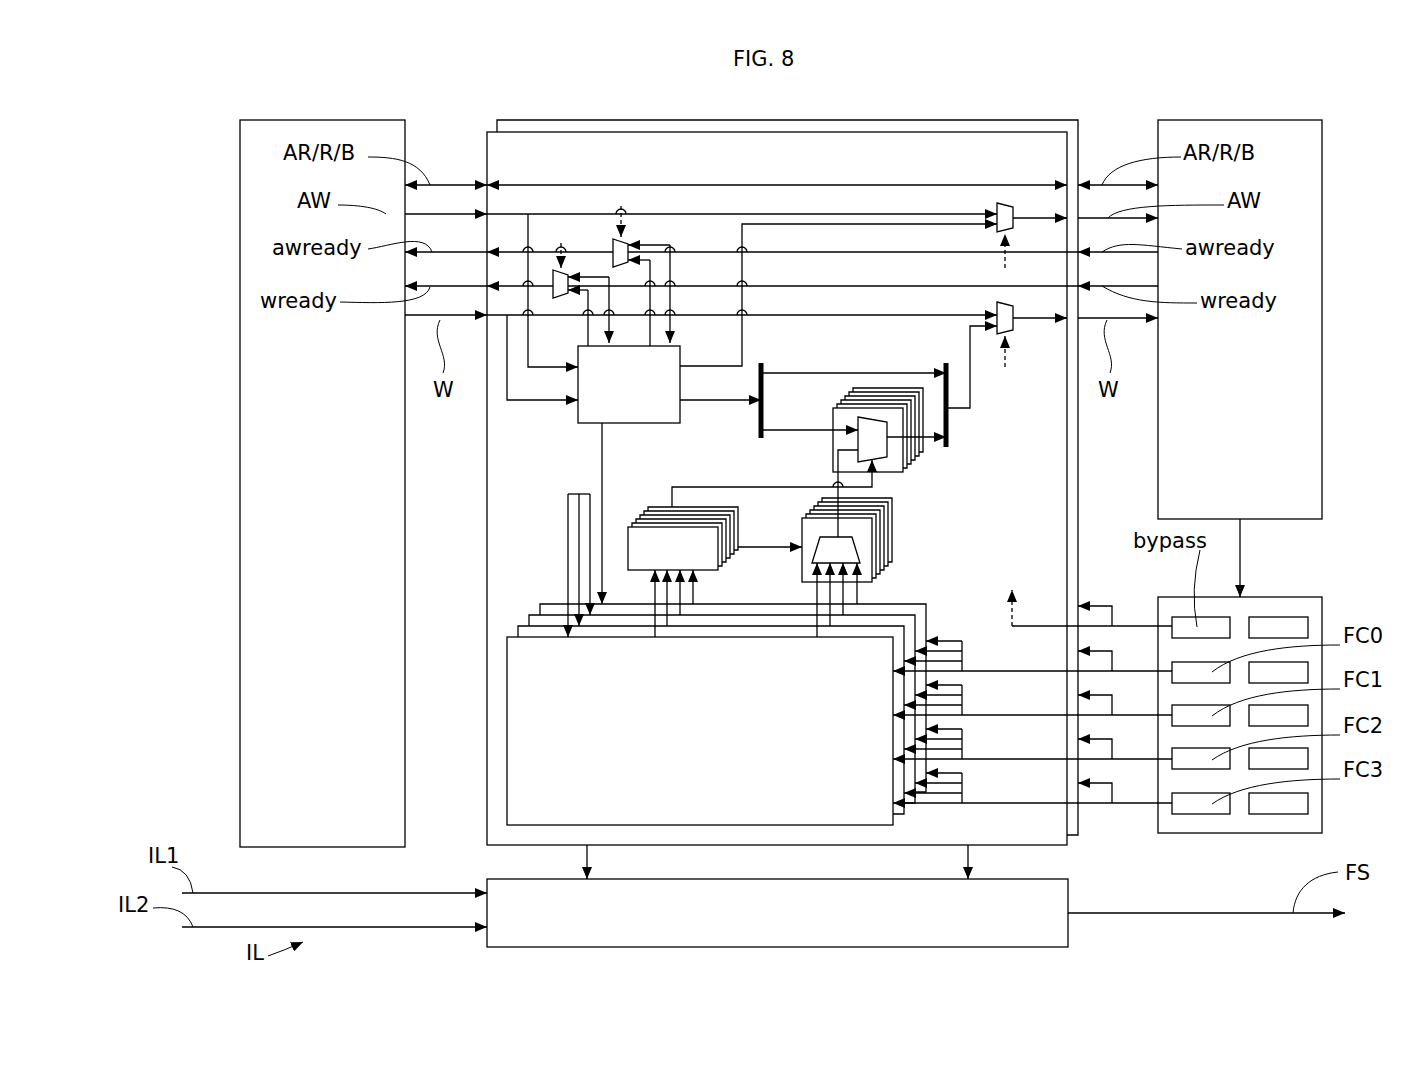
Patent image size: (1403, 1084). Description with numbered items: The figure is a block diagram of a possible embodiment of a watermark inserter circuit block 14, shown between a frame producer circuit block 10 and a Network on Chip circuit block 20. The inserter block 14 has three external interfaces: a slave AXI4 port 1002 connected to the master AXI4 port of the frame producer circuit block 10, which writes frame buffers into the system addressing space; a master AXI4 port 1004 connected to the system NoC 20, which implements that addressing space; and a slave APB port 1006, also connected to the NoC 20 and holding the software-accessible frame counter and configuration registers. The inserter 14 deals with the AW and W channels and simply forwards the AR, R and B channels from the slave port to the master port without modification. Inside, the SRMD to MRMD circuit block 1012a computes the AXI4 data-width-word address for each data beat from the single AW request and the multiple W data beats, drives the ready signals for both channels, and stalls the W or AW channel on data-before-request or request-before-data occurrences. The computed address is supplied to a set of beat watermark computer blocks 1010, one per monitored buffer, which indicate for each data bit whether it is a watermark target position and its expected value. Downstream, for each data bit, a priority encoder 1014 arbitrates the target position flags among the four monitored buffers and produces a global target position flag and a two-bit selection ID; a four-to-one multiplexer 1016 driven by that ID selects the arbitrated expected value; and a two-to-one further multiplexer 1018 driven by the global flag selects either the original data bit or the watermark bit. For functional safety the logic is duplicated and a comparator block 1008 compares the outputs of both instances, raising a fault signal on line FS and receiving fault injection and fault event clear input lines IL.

The frame producer circuit block 10 is at (250, 515).
The watermark inserter circuit block 14 is at (935, 107).
The Network on Chip circuit block 20 is at (1293, 373).
The slave AXI4 port 1002 is at (444, 150).
The master AXI4 port 1004 is at (1105, 135).
The slave APB port 1006 is at (1118, 832).
The comparator block 1008 is at (752, 890).
The beat watermark computer block 1010 is at (752, 808).
The SRMD to MRMD circuit block 1012a is at (595, 410).
The priority encoder 1014 is at (645, 538).
The multiplexer 1016 is at (862, 527).
The further multiplexer 1018 is at (895, 463).